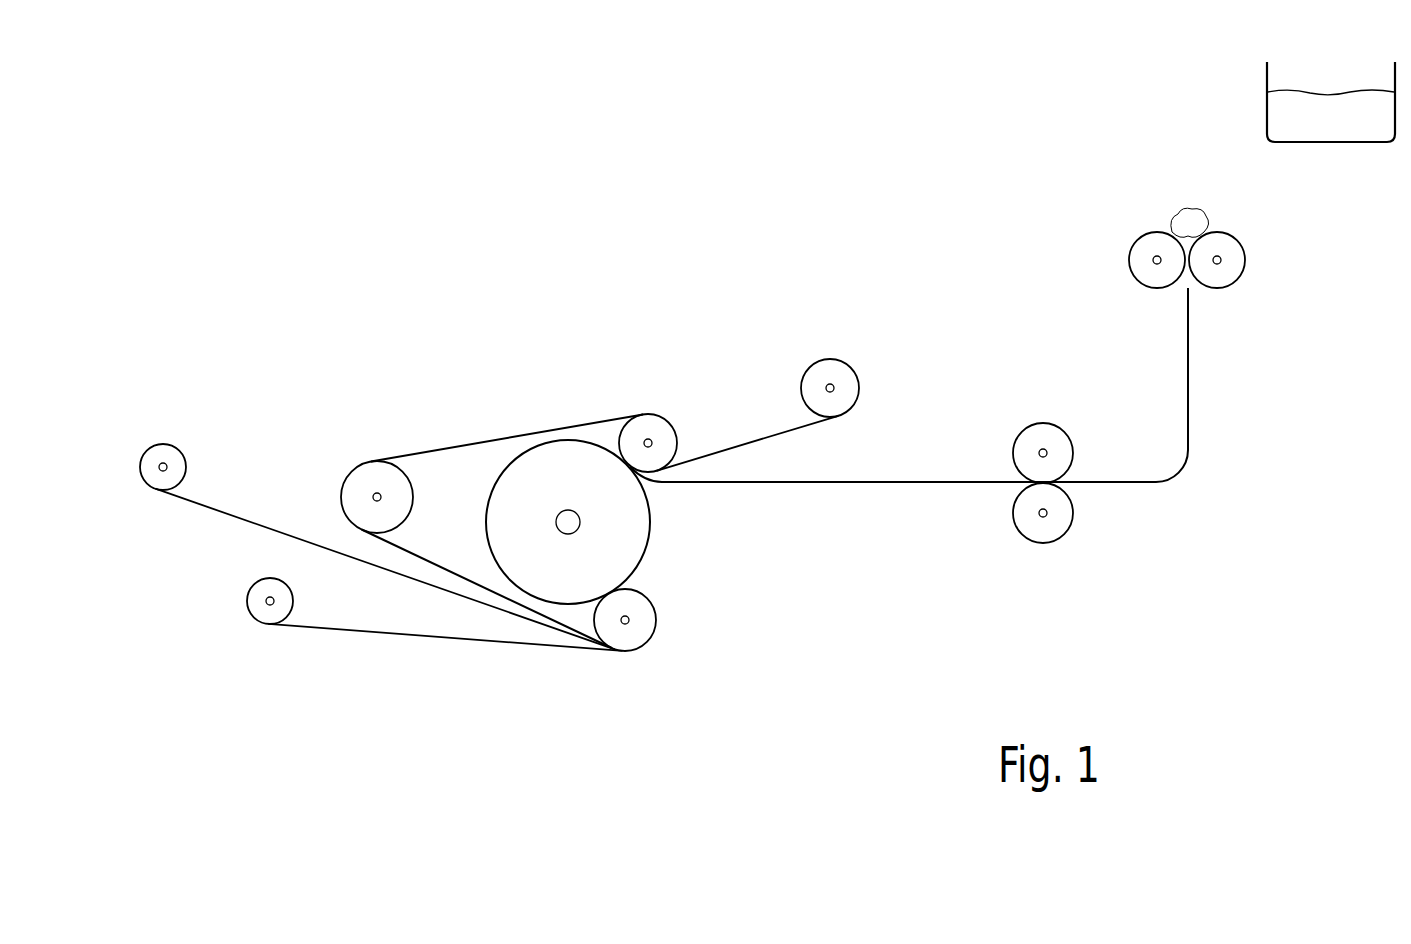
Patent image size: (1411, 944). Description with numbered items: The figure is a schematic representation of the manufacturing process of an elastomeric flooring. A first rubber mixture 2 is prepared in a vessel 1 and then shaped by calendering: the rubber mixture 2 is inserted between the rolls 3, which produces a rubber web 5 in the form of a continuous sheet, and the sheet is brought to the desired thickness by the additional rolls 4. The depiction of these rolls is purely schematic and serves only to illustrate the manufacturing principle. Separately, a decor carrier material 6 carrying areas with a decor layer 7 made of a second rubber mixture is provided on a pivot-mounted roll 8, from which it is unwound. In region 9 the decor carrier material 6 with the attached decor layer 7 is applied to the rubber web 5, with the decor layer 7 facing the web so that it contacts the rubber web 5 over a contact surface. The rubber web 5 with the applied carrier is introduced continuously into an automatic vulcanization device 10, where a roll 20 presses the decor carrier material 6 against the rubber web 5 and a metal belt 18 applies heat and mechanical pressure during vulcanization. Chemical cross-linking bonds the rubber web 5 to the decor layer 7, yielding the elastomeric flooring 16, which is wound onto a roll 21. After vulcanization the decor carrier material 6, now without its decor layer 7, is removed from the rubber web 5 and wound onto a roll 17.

The vessel 1 is at (1265, 111).
The first rubber mixture 2 is at (1182, 215).
The rolls 3 is at (1234, 271).
The additional rolls 4 is at (1045, 546).
The rubber web 5 is at (1190, 376).
The decor carrier material 6 is at (252, 521).
The decor layer 7 is at (493, 645).
The roll 8 is at (830, 362).
The region 9 is at (655, 490).
The automatic vulcanization device 10 is at (548, 733).
The elastomeric flooring 16 is at (402, 636).
The roll 17 is at (165, 445).
The metal belt 18 is at (503, 437).
The roll 20 is at (648, 418).
The roll 21 is at (268, 625).